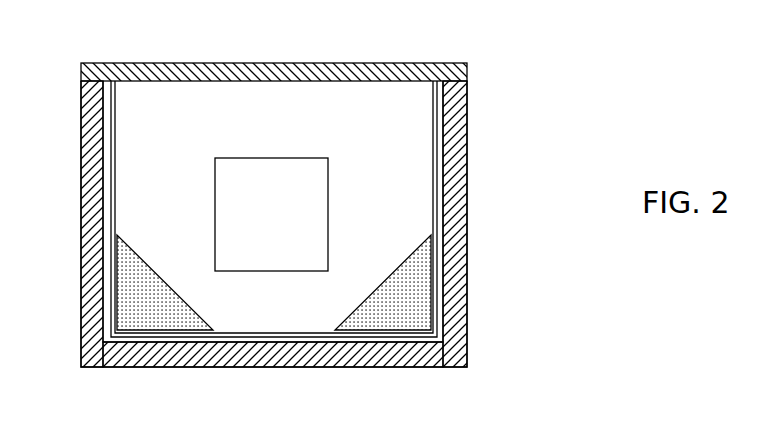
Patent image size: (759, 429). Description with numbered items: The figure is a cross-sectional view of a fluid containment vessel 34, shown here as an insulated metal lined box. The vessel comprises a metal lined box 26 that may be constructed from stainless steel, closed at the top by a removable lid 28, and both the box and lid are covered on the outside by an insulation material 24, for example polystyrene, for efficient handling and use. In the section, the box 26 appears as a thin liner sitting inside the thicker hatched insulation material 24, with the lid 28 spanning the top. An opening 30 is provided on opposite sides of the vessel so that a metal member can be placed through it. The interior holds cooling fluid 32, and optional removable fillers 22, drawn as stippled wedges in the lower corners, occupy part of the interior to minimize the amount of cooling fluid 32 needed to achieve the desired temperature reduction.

The removable fillers 22 is at (179, 322).
The insulation material 24 is at (82, 157).
The metal lined box 26 is at (115, 117).
The removable lid 28 is at (428, 63).
The opening 30 is at (240, 191).
The cooling fluid 32 is at (274, 207).
The fluid containment vessel 34 is at (290, 220).